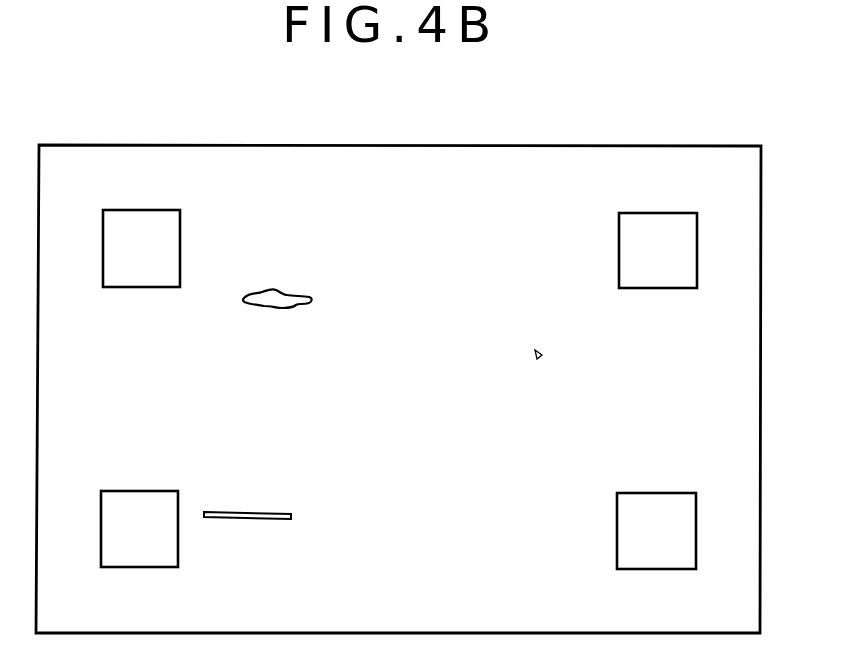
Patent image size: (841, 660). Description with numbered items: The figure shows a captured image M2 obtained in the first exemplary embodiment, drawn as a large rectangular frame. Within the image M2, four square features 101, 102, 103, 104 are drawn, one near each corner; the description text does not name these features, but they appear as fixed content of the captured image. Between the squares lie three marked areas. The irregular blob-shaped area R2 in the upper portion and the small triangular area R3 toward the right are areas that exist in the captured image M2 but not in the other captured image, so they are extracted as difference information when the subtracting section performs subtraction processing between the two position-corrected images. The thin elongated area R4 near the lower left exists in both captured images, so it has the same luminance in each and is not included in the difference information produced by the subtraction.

The captured image M2 is at (714, 126).
The electronic component 101 is at (137, 210).
The electronic component 102 is at (135, 491).
The electronic component 103 is at (658, 213).
The electronic component 104 is at (655, 493).
The area R2 is at (288, 293).
The area R3 is at (540, 353).
The area R4 is at (262, 512).